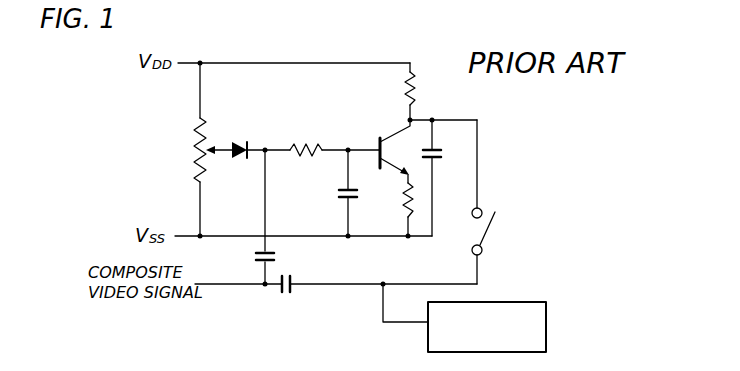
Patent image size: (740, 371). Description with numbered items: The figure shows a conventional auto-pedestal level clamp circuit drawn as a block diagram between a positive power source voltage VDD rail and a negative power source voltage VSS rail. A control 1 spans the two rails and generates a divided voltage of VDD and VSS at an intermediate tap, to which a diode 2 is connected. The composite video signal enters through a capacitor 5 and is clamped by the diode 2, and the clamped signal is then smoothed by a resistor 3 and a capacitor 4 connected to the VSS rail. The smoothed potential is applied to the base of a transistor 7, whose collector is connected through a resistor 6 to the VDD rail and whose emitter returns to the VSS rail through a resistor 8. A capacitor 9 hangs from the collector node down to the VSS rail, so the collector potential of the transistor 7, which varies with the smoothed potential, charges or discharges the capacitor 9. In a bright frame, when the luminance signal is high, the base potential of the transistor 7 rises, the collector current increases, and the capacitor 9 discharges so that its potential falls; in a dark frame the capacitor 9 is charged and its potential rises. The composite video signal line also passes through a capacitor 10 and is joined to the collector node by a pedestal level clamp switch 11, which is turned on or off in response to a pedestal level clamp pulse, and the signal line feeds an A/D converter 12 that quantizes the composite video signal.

The control 1 is at (196, 138).
The diode 2 is at (237, 140).
The resistor 3 is at (310, 143).
The capacitor 4 is at (339, 195).
The capacitor 5 is at (276, 261).
The resistor 6 is at (405, 95).
The transistor 7 is at (394, 138).
The resistor 8 is at (402, 204).
The capacitor 9 is at (442, 160).
The capacitor 10 is at (284, 294).
The pedestal level clamp switch 11 is at (489, 236).
The A/D converter 12 is at (518, 302).